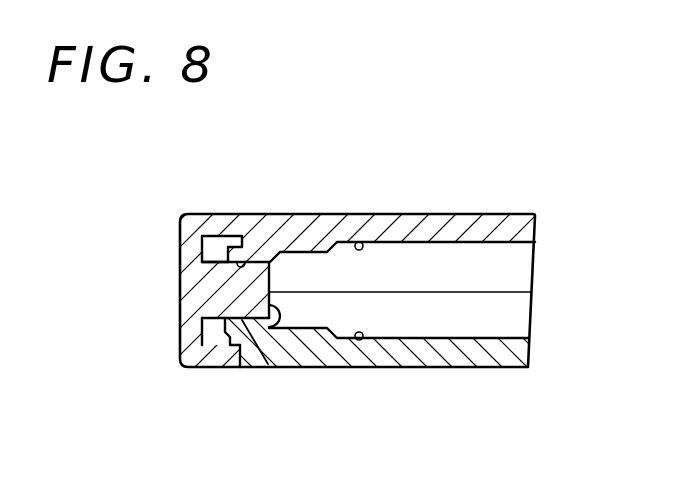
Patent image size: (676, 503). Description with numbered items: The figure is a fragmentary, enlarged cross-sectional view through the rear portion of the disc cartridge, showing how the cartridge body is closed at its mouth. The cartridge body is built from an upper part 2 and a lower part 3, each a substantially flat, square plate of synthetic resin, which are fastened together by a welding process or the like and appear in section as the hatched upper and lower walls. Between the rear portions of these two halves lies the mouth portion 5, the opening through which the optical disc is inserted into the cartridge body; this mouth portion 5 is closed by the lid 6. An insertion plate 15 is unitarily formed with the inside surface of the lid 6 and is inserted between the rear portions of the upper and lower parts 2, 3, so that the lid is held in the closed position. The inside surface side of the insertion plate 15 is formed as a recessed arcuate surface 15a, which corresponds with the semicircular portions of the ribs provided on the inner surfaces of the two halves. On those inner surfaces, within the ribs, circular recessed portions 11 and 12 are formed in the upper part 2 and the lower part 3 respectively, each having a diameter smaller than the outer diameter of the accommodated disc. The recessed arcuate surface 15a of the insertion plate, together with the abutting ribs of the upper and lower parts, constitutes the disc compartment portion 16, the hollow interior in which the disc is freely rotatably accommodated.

The upper part 2 is at (441, 223).
The lower part 3 is at (478, 357).
The mouth portion 5 is at (248, 263).
The lid 6 is at (180, 263).
The circular recessed portion 11 is at (359, 242).
The circular recessed portion 12 is at (362, 342).
The insertion plate 15 is at (250, 303).
The recessed arcuate surface 15a is at (265, 366).
The disc compartment portion 16 is at (470, 277).